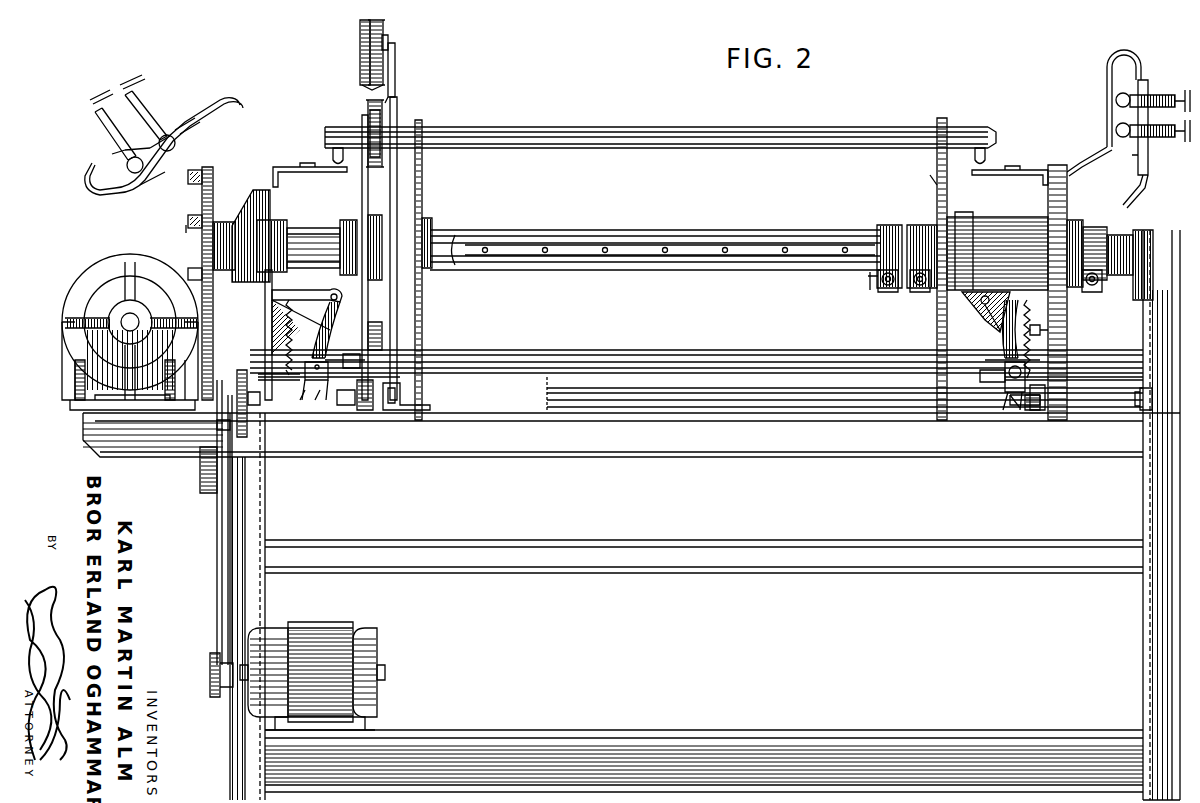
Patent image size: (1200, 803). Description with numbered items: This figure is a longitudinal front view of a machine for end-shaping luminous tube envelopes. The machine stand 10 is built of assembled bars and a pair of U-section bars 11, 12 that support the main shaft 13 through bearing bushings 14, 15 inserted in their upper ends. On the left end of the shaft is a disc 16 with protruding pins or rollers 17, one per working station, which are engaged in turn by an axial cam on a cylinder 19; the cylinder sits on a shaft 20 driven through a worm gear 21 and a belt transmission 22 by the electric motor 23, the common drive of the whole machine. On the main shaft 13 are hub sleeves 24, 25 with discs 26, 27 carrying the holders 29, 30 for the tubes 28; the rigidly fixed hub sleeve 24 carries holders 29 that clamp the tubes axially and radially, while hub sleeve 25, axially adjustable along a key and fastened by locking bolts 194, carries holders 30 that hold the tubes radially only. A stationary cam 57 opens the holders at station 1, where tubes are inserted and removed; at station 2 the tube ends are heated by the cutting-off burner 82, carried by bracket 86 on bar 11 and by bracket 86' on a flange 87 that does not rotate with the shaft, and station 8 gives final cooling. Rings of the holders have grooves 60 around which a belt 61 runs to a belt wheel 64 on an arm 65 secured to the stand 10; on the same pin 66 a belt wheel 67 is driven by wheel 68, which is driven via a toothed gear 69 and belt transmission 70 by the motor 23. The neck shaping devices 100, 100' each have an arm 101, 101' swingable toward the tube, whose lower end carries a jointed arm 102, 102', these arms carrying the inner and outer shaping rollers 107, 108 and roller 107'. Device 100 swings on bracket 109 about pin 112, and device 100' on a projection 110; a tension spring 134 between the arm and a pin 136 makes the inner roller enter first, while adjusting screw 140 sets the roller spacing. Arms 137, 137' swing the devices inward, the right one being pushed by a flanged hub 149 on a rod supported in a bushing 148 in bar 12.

The station 1 is at (181, 232).
The station 2 is at (196, 164).
The station 8 is at (326, 134).
The machine stand 10 is at (1147, 636).
The U-section bar 11 is at (260, 532).
The U-section bar 12 is at (1150, 510).
The main shaft 13 is at (643, 238).
The bearing bushing 14 is at (275, 238).
The bearing bushing 15 is at (1143, 232).
The disc 16 is at (213, 196).
The pins or rollers 17 is at (187, 220).
The cylinder 19 is at (100, 270).
The shaft 20 is at (125, 318).
The worm gear 21 is at (70, 372).
The belt transmission 22 is at (217, 590).
The electric motor 23 is at (370, 655).
The hub sleeve 24 is at (422, 225).
The hub sleeve 25 is at (920, 225).
The disc 26 is at (362, 180).
The disc 27 is at (937, 183).
The tube 28 is at (648, 131).
The holder 29 is at (382, 122).
The holder 30 is at (945, 123).
The cam 57 is at (352, 214).
The groove 60 is at (395, 92).
The belt 61 is at (372, 88).
The belt wheel 64 is at (370, 55).
The arm 65 is at (397, 180).
The pin 66 is at (388, 46).
The belt wheel 67 is at (360, 32).
The wheel 68 is at (365, 425).
The toothed gear 69 is at (247, 430).
The belt transmission 70 is at (228, 612).
The cutting-off burner 82 is at (333, 156).
The bracket 86 is at (310, 180).
The bracket 86' is at (1019, 156).
The flange 87 is at (1067, 190).
The neck shaping device 100 is at (700, 407).
The neck shaping device 100' is at (972, 381).
The arm 101 is at (336, 330).
The arm 101' is at (982, 329).
The arm 102 is at (301, 381).
The arm 102' is at (994, 405).
The inner shaping roller 107 is at (345, 349).
The shaping roller 107' is at (996, 349).
The outer shaping roller 108 is at (400, 388).
The bracket 109 is at (325, 293).
The projection 110 is at (970, 302).
The pin 112 is at (983, 310).
The tension spring 134 is at (287, 362).
The pin 136 is at (1022, 379).
The arm 137 is at (303, 414).
The arm 137' is at (1022, 421).
The adjusting screw 140 is at (1040, 334).
The bushing 148 is at (1138, 410).
The flanged hub 149 is at (1040, 412).
The locking bolts 194 is at (925, 290).